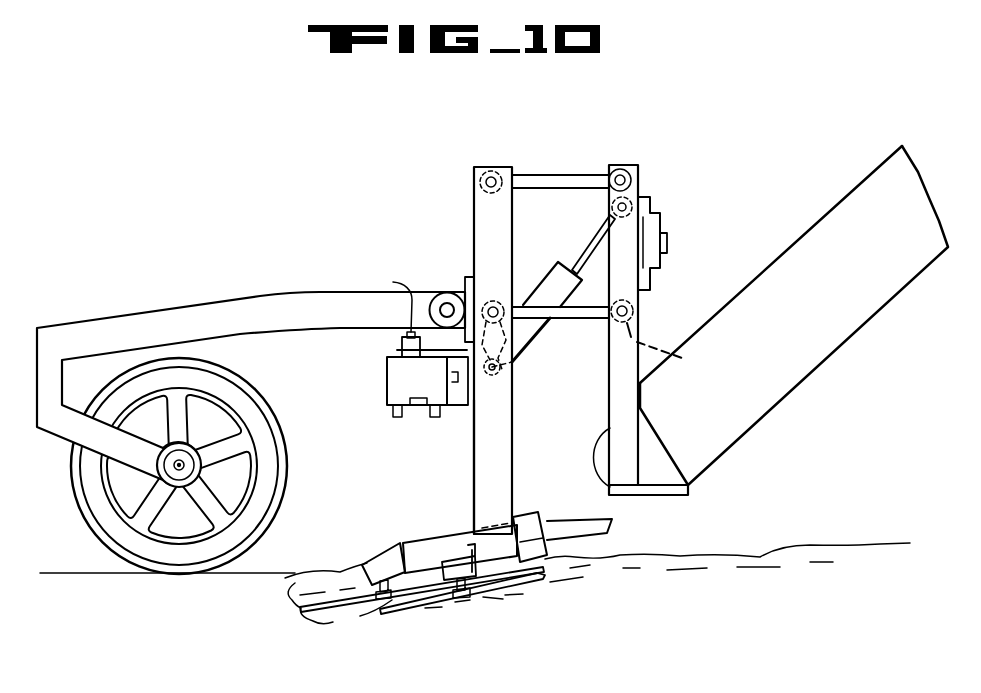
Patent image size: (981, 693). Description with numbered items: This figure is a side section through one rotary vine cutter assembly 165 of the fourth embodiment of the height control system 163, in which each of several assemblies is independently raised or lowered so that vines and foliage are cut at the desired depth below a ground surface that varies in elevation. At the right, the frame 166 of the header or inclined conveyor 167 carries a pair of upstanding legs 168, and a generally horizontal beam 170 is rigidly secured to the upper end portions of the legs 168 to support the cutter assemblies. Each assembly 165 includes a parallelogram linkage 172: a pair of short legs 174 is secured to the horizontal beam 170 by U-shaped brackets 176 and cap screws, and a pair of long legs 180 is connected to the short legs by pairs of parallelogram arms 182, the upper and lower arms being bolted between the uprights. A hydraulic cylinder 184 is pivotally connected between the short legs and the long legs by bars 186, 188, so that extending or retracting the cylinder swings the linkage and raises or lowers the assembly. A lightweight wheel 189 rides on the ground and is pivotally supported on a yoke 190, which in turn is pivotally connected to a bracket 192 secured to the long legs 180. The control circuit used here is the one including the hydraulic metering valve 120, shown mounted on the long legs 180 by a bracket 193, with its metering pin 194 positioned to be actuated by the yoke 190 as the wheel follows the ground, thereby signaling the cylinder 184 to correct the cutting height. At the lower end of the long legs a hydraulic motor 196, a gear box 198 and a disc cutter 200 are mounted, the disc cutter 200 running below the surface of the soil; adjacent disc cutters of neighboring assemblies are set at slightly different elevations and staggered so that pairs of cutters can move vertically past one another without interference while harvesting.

The hydraulic metering valve 120 is at (383, 376).
The height control system 163 is at (694, 130).
The rotary vine cutter assembly 165 is at (566, 140).
The frame 166 is at (842, 300).
The inclined conveyor 167 is at (863, 178).
The upstanding leg 168 is at (623, 441).
The horizontal beam 170 is at (642, 262).
The parallelogram linkage 172 is at (470, 183).
The short leg 174 is at (684, 348).
The U-shaped bracket 176 is at (658, 220).
The long leg 180 is at (510, 420).
The parallelogram arm 182 is at (537, 175).
The hydraulic cylinder 184 is at (548, 272).
The bar 186 is at (614, 205).
The bar 188 is at (515, 373).
The lightweight wheel 189 is at (85, 505).
The yoke 190 is at (106, 318).
The bracket 192 is at (465, 282).
The bracket 193 is at (470, 407).
The metering pin 194 is at (377, 292).
The hydraulic motor 196 is at (607, 533).
The gear box 198 is at (458, 560).
The disc cutter 200 is at (388, 615).